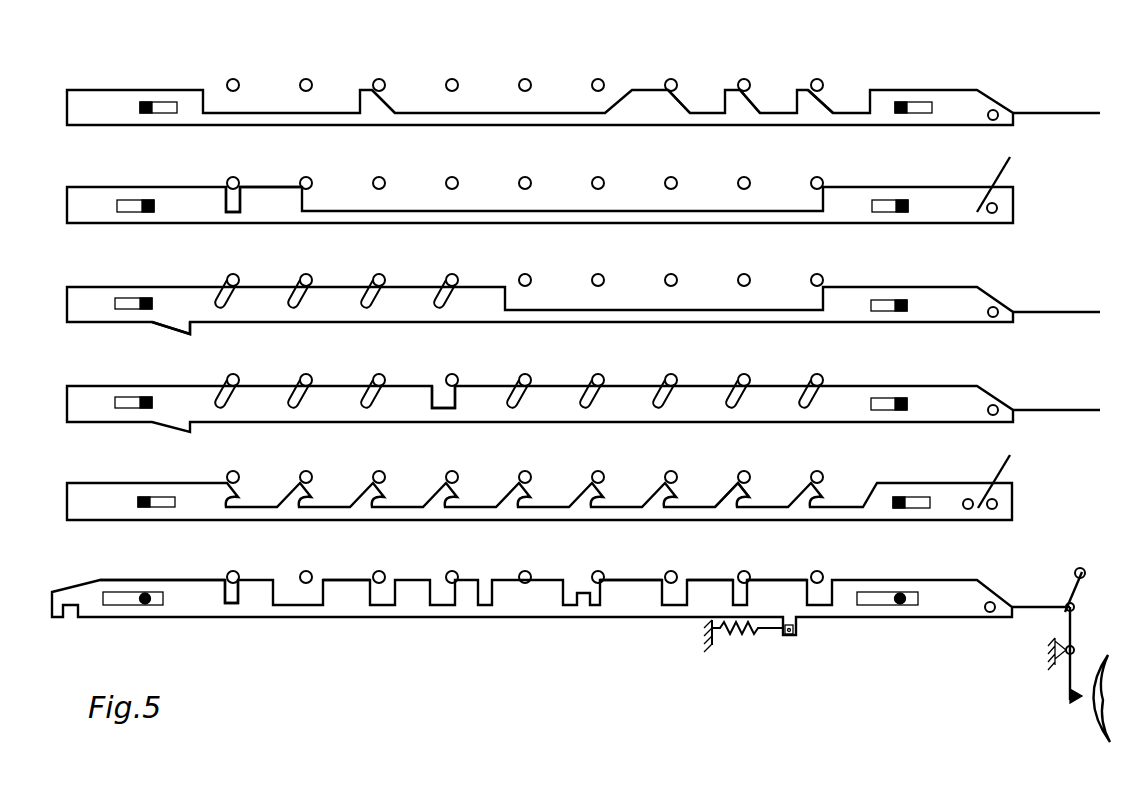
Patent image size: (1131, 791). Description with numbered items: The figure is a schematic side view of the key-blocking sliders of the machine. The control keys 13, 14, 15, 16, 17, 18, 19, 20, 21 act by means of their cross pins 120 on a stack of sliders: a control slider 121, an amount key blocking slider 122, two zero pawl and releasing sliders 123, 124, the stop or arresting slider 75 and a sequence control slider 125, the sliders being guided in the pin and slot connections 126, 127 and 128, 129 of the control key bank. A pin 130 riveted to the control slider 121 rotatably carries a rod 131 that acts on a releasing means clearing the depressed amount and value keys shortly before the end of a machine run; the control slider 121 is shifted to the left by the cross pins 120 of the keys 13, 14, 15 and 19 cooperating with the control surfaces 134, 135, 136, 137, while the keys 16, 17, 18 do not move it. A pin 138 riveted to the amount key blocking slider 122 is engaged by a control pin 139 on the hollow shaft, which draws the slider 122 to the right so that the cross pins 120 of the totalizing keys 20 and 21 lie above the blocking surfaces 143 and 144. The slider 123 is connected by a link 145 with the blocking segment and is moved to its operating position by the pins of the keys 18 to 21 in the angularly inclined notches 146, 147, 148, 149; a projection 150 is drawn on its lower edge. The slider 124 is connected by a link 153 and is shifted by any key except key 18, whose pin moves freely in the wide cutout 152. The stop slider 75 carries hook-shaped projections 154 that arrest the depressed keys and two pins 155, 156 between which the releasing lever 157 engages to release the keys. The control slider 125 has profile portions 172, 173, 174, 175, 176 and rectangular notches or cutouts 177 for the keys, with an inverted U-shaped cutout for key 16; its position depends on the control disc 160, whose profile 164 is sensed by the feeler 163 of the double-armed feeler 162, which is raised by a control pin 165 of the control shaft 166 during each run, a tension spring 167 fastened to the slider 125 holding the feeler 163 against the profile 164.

The control key 13 is at (824, 74).
The control key 14 is at (752, 74).
The control key 15 is at (679, 74).
The control key 16 is at (602, 74).
The control key 17 is at (525, 74).
The control key 18 is at (456, 74).
The control key 19 is at (380, 74).
The control key 20 is at (313, 74).
The control key 21 is at (241, 74).
The stop slider 75 is at (610, 508).
The cross pins 120 is at (309, 57).
The control slider 121 is at (488, 115).
The amount key blocking slider 122 is at (555, 210).
The zero pawl and releasing slider 123 is at (548, 308).
The zero pawl and releasing slider 124 is at (610, 400).
The control slider 125 is at (625, 600).
The pin and slot connection 126 is at (175, 68).
The pin and slot connection 127 is at (160, 104).
The pin and slot connection 128 is at (956, 68).
The pin and slot connection 129 is at (922, 104).
The pin 130 is at (1000, 112).
The rod 131 is at (1078, 112).
The control surface 134 is at (828, 108).
The control surface 135 is at (752, 105).
The control surface 136 is at (683, 105).
The control surface 137 is at (395, 105).
The pin 138 is at (999, 208).
The control pin 139 is at (1005, 178).
The blocking surface 143 is at (266, 187).
The blocking surface 144 is at (193, 187).
The link 145 is at (1022, 312).
The angularly inclined notch 146 is at (459, 292).
The angularly inclined notch 147 is at (386, 292).
The angularly inclined notch 148 is at (313, 292).
The angularly inclined notch 149 is at (240, 292).
The projection 150 is at (195, 328).
The cutout 152 is at (442, 398).
The link 153 is at (1012, 410).
The hook-shaped projections 154 is at (748, 492).
The pin 155 is at (966, 499).
The pin 156 is at (998, 504).
The releasing lever 157 is at (1003, 470).
The control disc 160 is at (1068, 684).
The double-armed feeler 162 is at (1067, 626).
The feeler 163 is at (1067, 690).
The profile 164 is at (1084, 714).
The control pin 165 is at (1063, 592).
The control shaft 166 is at (1075, 571).
The tension spring 167 is at (757, 640).
The profile portion 172 is at (785, 582).
The profile portion 173 is at (712, 582).
The profile portion 174 is at (650, 580).
The profile portion 175 is at (335, 580).
The profile portion 176 is at (192, 580).
The rectangular notches or cutouts 177 is at (233, 598).